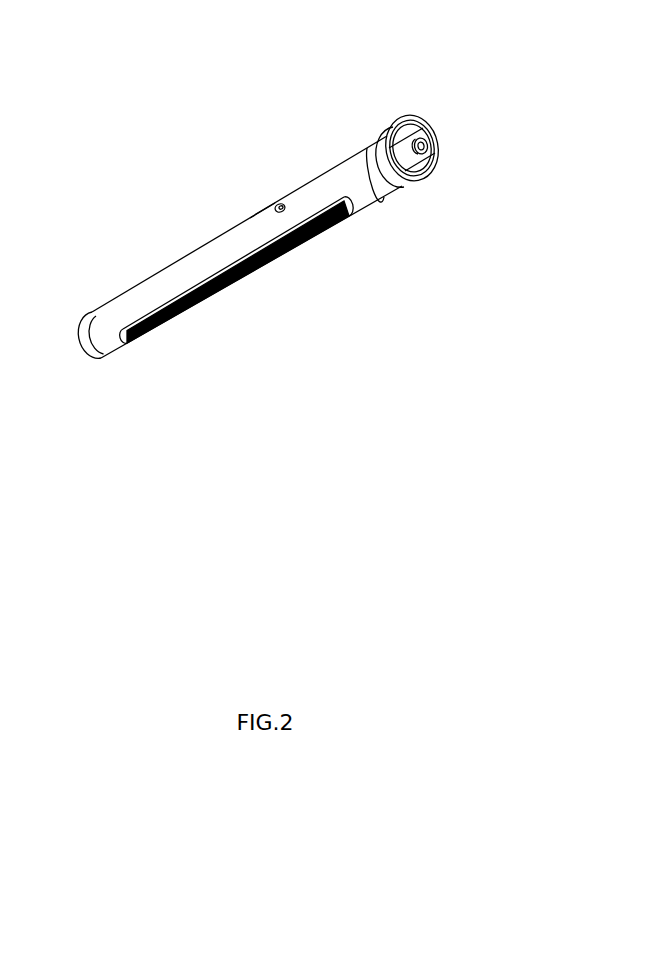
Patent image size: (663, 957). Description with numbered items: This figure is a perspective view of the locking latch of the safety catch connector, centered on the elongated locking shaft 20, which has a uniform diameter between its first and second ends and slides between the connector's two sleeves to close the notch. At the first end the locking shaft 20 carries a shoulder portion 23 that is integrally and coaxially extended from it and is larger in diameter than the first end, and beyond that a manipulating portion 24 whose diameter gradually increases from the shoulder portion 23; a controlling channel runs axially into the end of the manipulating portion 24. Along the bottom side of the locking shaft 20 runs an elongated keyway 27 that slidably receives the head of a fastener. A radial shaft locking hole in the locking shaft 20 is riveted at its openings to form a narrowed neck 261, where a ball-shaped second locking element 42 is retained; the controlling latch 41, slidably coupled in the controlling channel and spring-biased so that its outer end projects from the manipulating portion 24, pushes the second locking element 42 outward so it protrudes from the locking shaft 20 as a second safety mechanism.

The locking shaft 20 is at (193, 251).
The shoulder portion 23 is at (339, 201).
The manipulating portion 24 is at (368, 146).
The keyway 27 is at (140, 343).
The controlling latch 41 is at (430, 140).
The second locking element 42 is at (279, 203).
The narrowed neck 261 is at (265, 211).